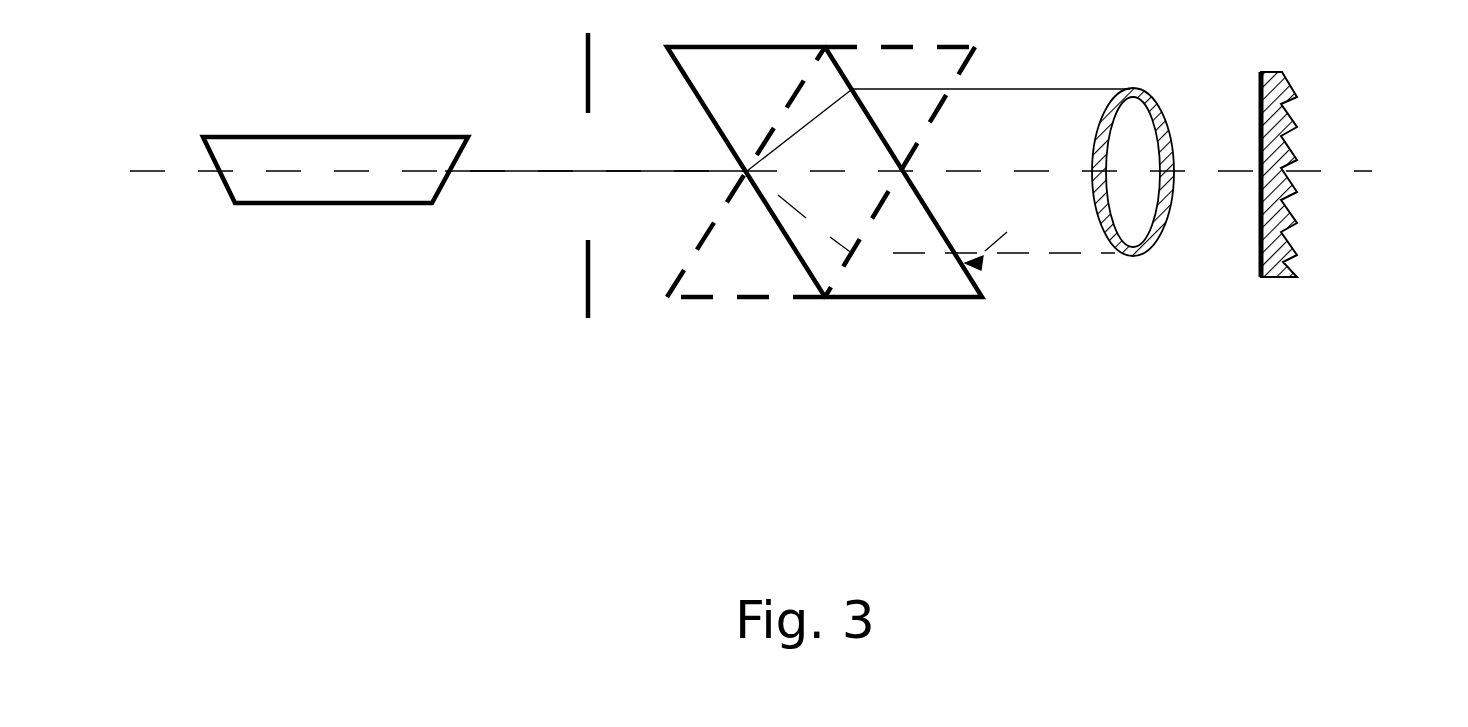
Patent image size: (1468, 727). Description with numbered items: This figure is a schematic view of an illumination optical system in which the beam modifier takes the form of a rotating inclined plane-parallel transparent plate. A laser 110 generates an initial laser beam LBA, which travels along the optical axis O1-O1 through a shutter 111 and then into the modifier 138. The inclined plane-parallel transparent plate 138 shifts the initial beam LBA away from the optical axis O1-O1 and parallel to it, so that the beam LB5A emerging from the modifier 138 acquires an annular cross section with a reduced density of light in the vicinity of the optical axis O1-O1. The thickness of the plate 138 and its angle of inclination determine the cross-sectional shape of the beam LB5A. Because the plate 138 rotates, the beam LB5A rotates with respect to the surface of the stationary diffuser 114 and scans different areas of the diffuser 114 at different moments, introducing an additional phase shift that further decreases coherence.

The laser 110 is at (353, 203).
The initial laser beam LBA is at (507, 172).
The shutter 111 is at (590, 298).
The rotating inclined plane-parallel transparent plate 138 is at (893, 297).
The light beam LB5A is at (1152, 243).
The diffuser 114 is at (1270, 277).
The optical axis O1-O1 is at (1335, 172).